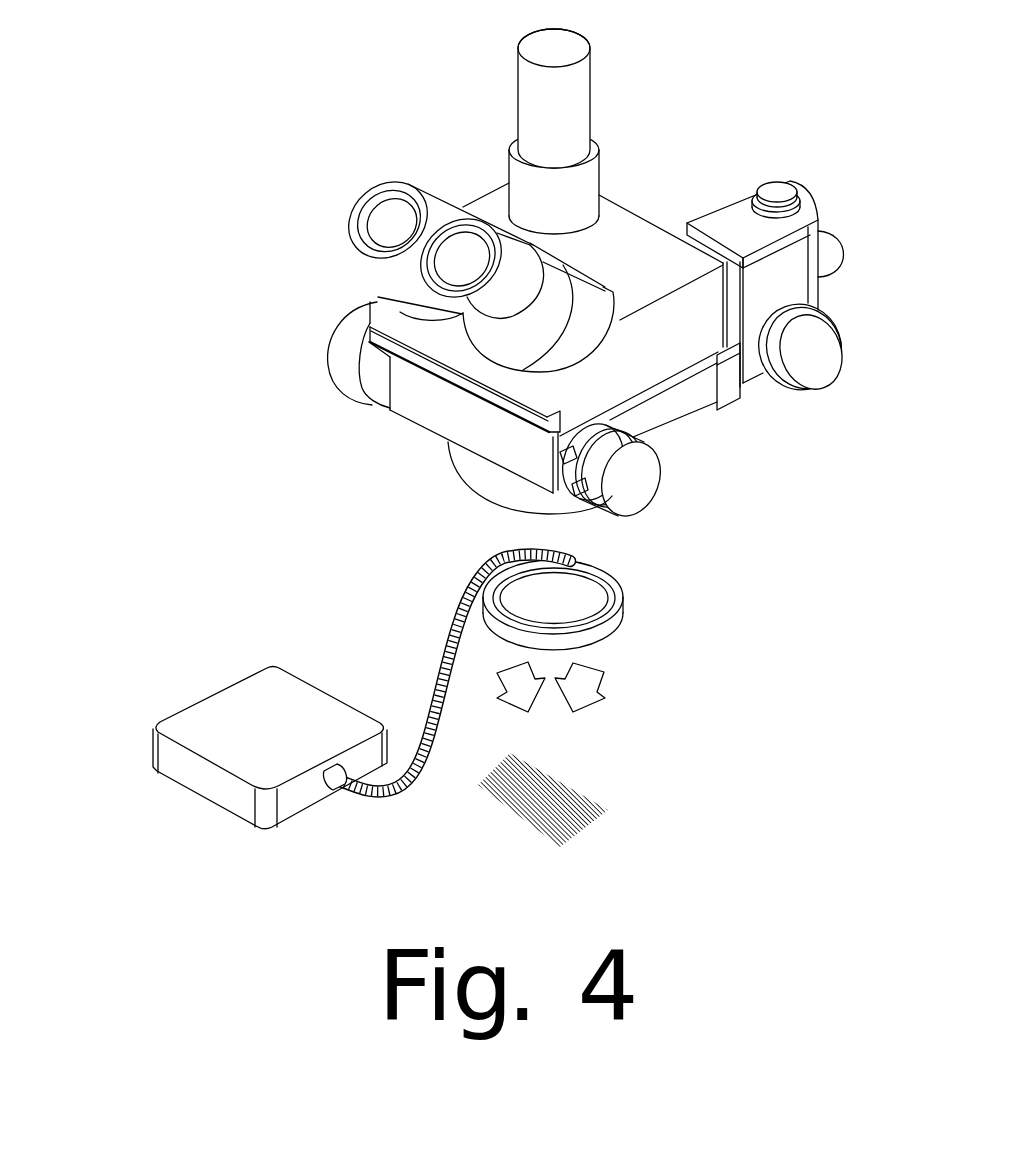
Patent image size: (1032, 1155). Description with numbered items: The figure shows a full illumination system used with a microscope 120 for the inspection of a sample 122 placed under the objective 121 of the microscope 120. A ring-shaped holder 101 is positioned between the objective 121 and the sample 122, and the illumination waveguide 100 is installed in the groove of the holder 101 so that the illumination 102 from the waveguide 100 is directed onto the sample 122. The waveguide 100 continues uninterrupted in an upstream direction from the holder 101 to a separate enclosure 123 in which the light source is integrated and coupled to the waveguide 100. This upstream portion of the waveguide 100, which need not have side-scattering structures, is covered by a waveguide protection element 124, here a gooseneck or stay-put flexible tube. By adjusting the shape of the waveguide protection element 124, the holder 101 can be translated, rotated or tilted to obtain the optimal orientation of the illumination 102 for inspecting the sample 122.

The microscope 120 is at (613, 235).
The objective 121 is at (507, 505).
The waveguide 100 is at (608, 594).
The holder 101 is at (602, 635).
The illumination 102 is at (583, 673).
The sample 122 is at (560, 830).
The separate enclosure 123 is at (223, 700).
The waveguide protection element 124 is at (440, 682).